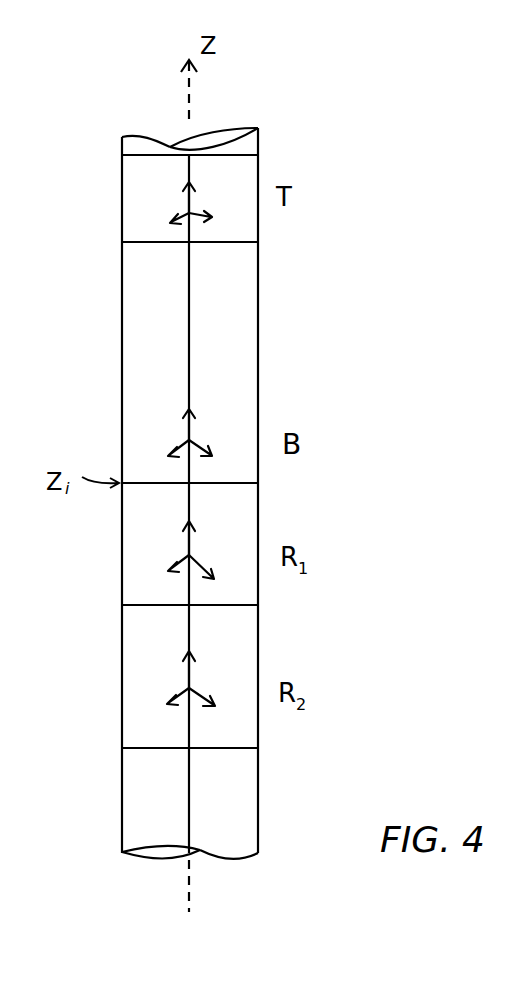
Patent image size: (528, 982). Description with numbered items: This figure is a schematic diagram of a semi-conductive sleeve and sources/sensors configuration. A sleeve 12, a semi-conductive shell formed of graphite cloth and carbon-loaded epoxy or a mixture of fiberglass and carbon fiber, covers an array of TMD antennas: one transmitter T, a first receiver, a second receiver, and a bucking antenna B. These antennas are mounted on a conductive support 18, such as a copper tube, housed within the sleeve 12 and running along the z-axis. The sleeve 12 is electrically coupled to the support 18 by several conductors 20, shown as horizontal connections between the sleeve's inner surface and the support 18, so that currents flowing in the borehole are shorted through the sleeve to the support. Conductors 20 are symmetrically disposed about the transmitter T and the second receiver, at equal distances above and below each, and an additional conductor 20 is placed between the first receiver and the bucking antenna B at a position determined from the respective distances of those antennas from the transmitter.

The sleeve 12 is at (258, 281).
The conductive support 18 is at (189, 357).
The conductor 20 is at (258, 155).